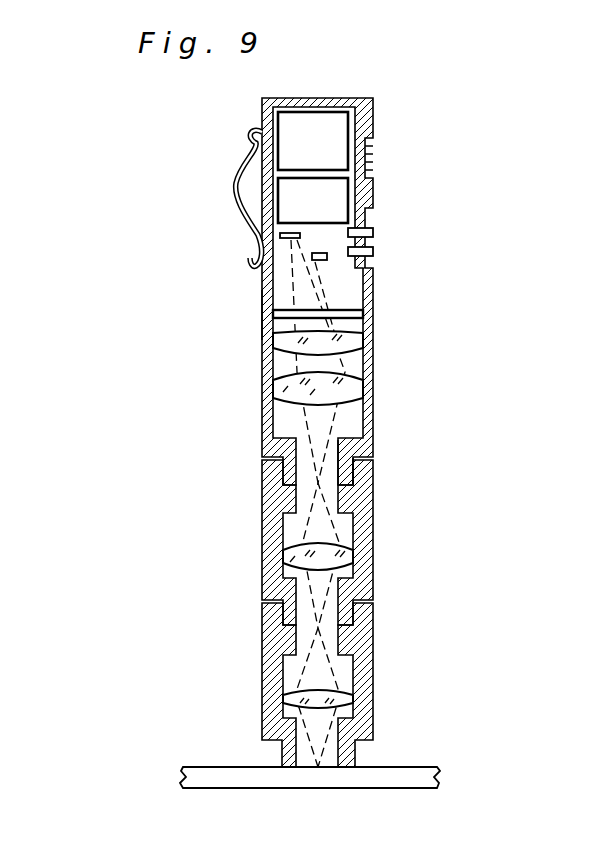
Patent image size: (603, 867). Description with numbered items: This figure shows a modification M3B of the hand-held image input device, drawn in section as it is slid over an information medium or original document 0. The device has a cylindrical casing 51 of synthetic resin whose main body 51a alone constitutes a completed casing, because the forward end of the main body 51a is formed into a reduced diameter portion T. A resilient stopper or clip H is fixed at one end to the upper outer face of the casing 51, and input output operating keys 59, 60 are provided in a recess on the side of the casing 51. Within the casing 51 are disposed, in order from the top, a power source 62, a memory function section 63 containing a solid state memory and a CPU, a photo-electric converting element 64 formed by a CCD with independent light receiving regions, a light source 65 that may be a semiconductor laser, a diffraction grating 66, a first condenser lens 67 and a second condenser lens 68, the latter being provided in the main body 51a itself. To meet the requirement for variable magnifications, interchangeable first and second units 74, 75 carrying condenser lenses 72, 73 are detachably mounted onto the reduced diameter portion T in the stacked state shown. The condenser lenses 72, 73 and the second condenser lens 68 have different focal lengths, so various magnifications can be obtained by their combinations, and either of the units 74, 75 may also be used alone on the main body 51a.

The image input device M3B is at (457, 172).
The casing 51 is at (373, 283).
The main body portion 51a is at (263, 312).
The reduced diameter portion T is at (360, 470).
The input output operating key 59 is at (372, 232).
The input output operating key 60 is at (372, 252).
The power source 62 is at (325, 120).
The memory function section 63 is at (337, 195).
The photo-electric converting element 64 is at (263, 229).
The light source 65 is at (313, 258).
The diffraction grating 66 is at (347, 305).
The first condenser lens 67 is at (360, 340).
The second condenser lens 68 is at (355, 392).
The condenser lens 72 is at (353, 553).
The condenser lens 73 is at (347, 698).
The first unit 74 is at (262, 513).
The second unit 75 is at (262, 655).
The clip H is at (233, 183).
The original document 0 is at (390, 775).